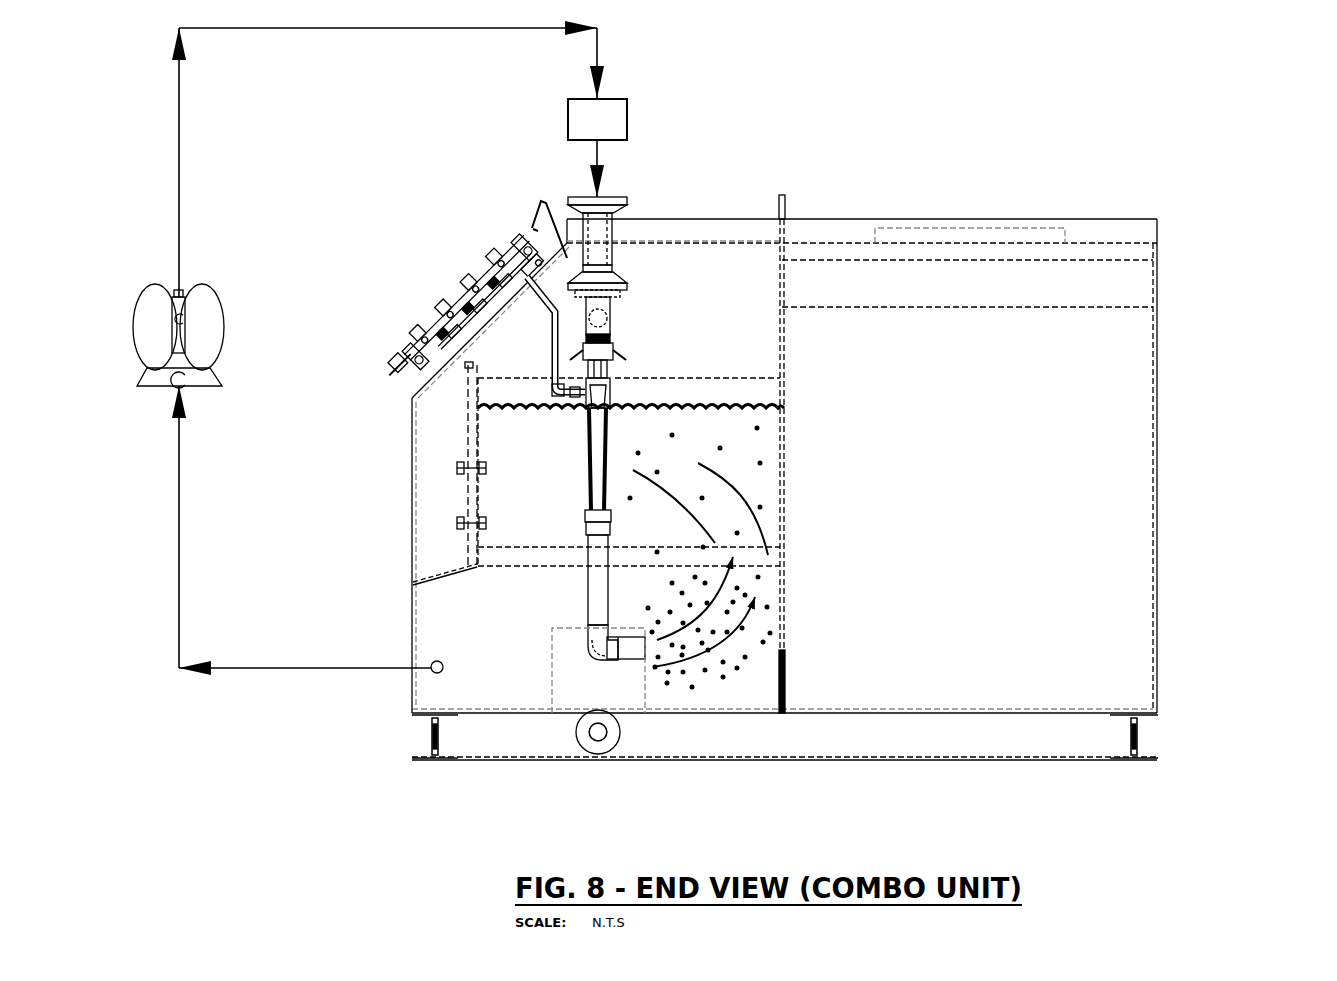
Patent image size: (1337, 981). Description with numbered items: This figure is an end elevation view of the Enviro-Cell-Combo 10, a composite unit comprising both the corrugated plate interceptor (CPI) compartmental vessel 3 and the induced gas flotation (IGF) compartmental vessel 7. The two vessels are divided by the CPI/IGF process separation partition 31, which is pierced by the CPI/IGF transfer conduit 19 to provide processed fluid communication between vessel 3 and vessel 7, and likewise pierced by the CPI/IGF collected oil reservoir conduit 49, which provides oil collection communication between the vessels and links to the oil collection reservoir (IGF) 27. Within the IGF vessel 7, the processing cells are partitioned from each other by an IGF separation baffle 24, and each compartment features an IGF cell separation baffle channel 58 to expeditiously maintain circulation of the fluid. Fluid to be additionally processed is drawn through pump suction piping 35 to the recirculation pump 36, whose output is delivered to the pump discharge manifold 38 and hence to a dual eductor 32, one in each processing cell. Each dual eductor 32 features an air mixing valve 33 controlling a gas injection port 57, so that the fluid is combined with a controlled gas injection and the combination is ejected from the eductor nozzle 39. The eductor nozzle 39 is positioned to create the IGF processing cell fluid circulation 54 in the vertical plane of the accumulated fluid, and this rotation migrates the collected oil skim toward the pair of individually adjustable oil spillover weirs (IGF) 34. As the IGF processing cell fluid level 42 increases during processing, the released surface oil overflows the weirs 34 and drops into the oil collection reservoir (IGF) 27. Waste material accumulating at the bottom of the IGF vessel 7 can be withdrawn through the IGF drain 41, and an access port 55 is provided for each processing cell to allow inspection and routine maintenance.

The corrugated plate interceptor (CPI) compartmental vessel 3 is at (1161, 614).
The induced gas flotation (IGF) compartmental vessel 7 is at (407, 683).
The Enviro-Cell-Combo 10 is at (995, 780).
The CPI/IGF transfer conduit 19 is at (783, 680).
The IGF separation baffle 24 is at (528, 376).
The oil collection reservoir (IGF) 27 is at (445, 575).
The CPI/IGF process separation partition 31 is at (783, 290).
The dual eductor 32 is at (613, 345).
The air mixing valve 33 is at (478, 283).
The adjustable oil spillover weirs (IGF) 34 is at (465, 443).
The pump suction piping 35 is at (182, 522).
The recirculation pump 36 is at (205, 290).
The pump discharge manifold 38 is at (566, 115).
The eductor nozzle 39 is at (630, 660).
The IGF drain 41 is at (583, 742).
The IGF processing cell fluid level 42 is at (765, 402).
The CPI/IGF collected oil reservoir conduit 49 is at (511, 506).
The IGF processing cell counterclockwise fluid circulation 54 is at (757, 528).
The access port 55 is at (425, 325).
The gas injection port 57 is at (449, 307).
The IGF cell separation baffle channel 58 is at (552, 668).